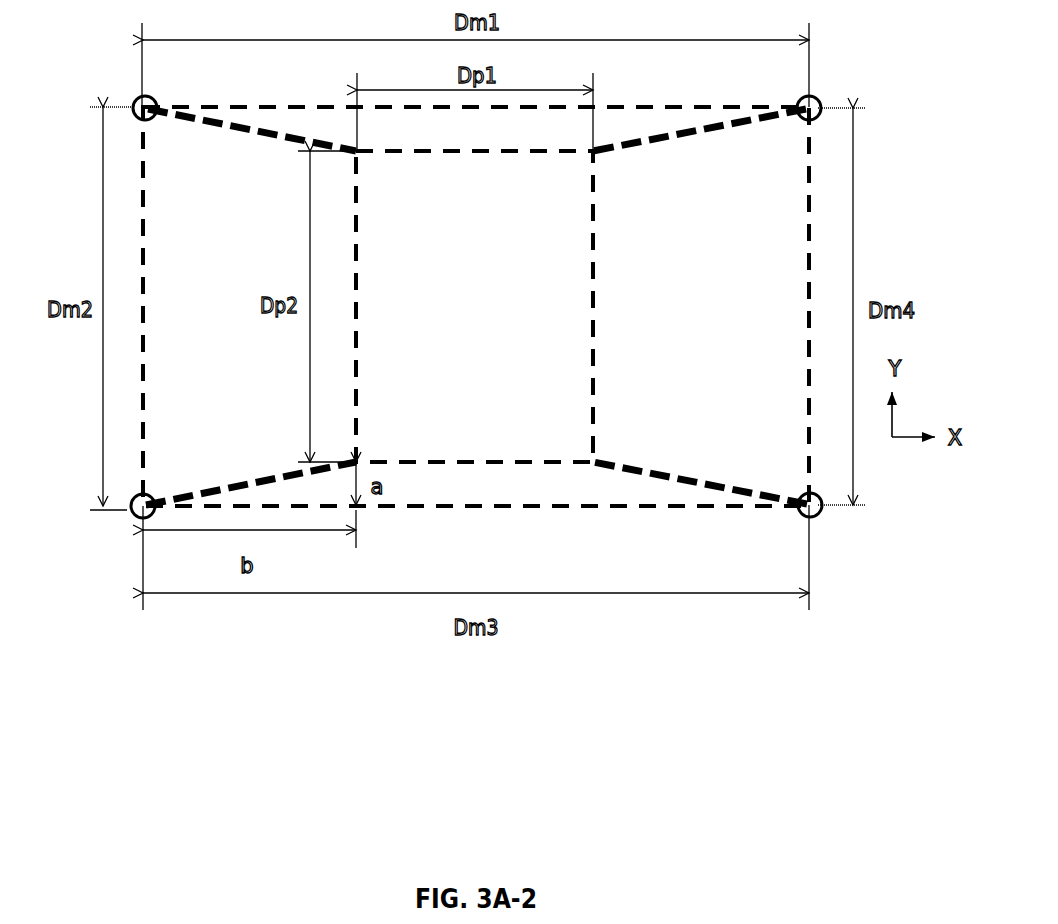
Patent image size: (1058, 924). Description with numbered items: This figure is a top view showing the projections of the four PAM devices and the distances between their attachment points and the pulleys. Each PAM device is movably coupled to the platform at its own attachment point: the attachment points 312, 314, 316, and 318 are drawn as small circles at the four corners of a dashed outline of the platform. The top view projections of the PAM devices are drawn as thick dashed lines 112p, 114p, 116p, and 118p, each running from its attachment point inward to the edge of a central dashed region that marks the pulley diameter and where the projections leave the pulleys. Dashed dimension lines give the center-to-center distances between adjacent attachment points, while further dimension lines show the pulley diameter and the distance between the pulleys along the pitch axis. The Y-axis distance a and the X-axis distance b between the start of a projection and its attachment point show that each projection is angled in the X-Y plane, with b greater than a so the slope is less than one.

The attachment point 312 is at (831, 96).
The attachment point 314 is at (128, 91).
The attachment point 316 is at (131, 522).
The attachment point 318 is at (829, 521).
The top view projection of PAM device 112p is at (707, 140).
The top view projection of PAM device 114p is at (245, 140).
The top view projection of PAM device 116p is at (243, 473).
The top view projection of PAM device 118p is at (700, 478).